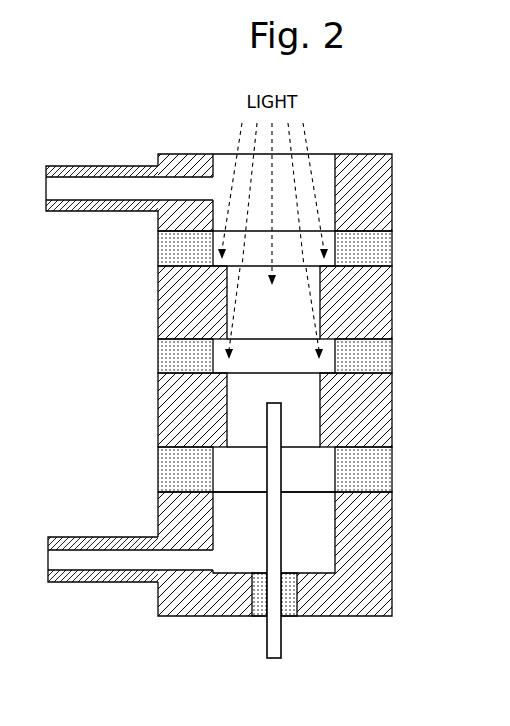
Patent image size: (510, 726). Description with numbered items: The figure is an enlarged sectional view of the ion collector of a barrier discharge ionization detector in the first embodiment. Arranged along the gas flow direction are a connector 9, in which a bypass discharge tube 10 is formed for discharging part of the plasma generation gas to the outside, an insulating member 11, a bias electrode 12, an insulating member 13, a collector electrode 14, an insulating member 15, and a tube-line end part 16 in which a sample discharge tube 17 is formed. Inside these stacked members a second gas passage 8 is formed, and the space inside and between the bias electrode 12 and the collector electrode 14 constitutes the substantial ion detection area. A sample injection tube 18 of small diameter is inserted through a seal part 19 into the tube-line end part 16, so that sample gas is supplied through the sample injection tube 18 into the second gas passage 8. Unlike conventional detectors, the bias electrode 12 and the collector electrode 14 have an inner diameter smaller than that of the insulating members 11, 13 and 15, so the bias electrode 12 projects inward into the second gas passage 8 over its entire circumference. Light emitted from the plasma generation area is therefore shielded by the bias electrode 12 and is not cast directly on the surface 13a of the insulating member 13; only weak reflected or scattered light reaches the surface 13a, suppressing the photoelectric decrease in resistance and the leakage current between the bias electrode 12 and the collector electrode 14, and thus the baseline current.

The second gas passage 8 is at (289, 311).
The connector 9 is at (392, 172).
The bypass discharge tube 10 is at (93, 166).
The insulating member 11 is at (157, 250).
The bias electrode 12 is at (392, 295).
The insulating member 13 is at (157, 352).
The surface of the insulating member 13a is at (340, 355).
The collector electrode 14 is at (392, 402).
The insulating member 15 is at (157, 470).
The tube-line end part 16 is at (353, 618).
The sample discharge tube 17 is at (93, 585).
The sample injection tube 18 is at (282, 505).
The seal part 19 is at (253, 618).